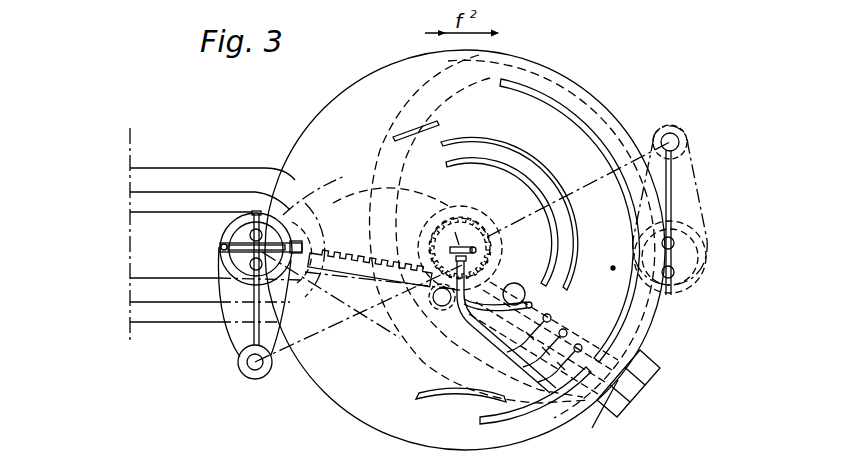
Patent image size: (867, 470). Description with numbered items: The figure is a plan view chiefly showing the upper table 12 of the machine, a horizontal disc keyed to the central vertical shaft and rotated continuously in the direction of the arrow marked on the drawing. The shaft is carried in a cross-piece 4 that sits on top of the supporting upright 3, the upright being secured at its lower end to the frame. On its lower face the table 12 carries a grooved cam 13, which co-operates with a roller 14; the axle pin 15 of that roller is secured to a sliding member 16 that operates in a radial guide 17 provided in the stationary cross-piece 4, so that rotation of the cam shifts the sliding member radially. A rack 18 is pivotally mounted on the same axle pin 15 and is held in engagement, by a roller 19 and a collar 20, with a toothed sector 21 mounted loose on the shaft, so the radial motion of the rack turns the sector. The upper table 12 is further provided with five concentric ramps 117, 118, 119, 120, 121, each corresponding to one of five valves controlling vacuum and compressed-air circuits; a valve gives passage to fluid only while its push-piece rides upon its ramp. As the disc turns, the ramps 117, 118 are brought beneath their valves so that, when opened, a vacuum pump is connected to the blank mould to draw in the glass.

The supporting upright 3 is at (585, 314).
The cross-piece 4 is at (647, 360).
The horizontal table 12 is at (604, 106).
The grooved cam 13 is at (476, 360).
The roller 14 is at (600, 414).
The axle pin 15 is at (640, 370).
The sliding member 16 is at (626, 386).
The radial guide 17 is at (631, 393).
The rack 18 is at (535, 317).
The roller 19 is at (437, 306).
The collar 20 is at (480, 227).
The toothed sector 21 is at (490, 238).
The ramp 117 is at (487, 157).
The ramp 118 is at (520, 155).
The ramp 119 is at (430, 121).
The ramp 120 is at (453, 408).
The ramp 121 is at (554, 100).